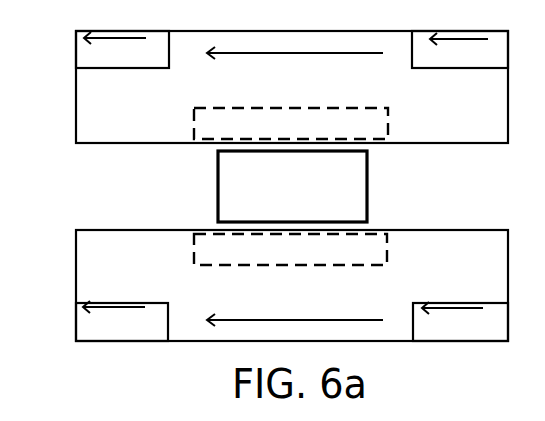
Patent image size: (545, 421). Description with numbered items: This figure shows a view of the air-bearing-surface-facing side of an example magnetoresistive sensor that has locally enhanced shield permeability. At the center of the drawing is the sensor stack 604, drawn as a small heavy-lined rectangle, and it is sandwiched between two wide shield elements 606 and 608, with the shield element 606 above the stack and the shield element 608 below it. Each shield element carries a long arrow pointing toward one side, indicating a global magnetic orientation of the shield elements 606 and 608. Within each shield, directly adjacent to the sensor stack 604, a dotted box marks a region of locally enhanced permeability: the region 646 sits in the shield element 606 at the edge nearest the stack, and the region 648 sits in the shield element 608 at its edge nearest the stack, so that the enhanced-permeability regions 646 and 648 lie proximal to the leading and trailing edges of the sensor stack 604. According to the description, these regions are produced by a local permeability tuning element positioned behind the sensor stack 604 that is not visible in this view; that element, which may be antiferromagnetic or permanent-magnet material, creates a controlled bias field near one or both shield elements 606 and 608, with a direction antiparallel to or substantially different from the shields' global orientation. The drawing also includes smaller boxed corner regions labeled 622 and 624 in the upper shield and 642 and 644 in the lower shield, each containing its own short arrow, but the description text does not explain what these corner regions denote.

The sensor stack 604 is at (274, 196).
The shield element 606 is at (274, 97).
The shield element 608 is at (274, 307).
The upper left region 622 is at (103, 61).
The upper right region 624 is at (441, 61).
The lower left region 642 is at (103, 331).
The lower right region 644 is at (442, 331).
The region of locally enhanced permeability 646 is at (291, 123).
The region of locally enhanced permeability 648 is at (290, 249).